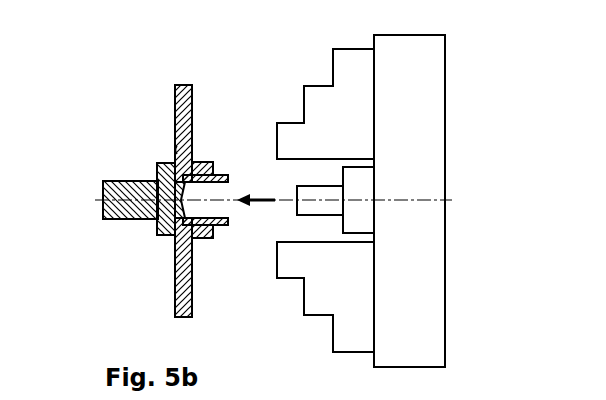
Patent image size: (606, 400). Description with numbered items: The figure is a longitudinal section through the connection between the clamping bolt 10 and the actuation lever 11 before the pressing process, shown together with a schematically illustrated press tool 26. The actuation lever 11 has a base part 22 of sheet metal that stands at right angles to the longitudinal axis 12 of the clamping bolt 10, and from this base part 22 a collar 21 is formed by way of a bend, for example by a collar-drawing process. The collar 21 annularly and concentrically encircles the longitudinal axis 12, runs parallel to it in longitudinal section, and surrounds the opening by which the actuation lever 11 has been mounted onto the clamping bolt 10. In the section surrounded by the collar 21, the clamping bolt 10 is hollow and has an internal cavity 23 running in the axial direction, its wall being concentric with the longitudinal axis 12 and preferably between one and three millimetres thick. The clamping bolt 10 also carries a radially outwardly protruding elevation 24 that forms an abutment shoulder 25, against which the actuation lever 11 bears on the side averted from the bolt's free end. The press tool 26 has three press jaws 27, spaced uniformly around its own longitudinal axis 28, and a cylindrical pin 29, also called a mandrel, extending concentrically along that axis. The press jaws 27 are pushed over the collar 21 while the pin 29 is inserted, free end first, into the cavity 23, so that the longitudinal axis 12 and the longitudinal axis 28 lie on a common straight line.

The clamping bolt 10 is at (103, 215).
The actuation lever 11 is at (158, 200).
The longitudinal axis 12 is at (106, 201).
The collar 21 is at (203, 167).
The base part 22 is at (174, 272).
The internal cavity 23 is at (205, 240).
The elevation 24 is at (158, 164).
The abutment shoulder 25 is at (177, 150).
The press tool 26 is at (455, 353).
The press jaws 27 is at (290, 142).
The longitudinal axis of the press tool 28 is at (412, 200).
The cylindrical pin 29 is at (320, 193).